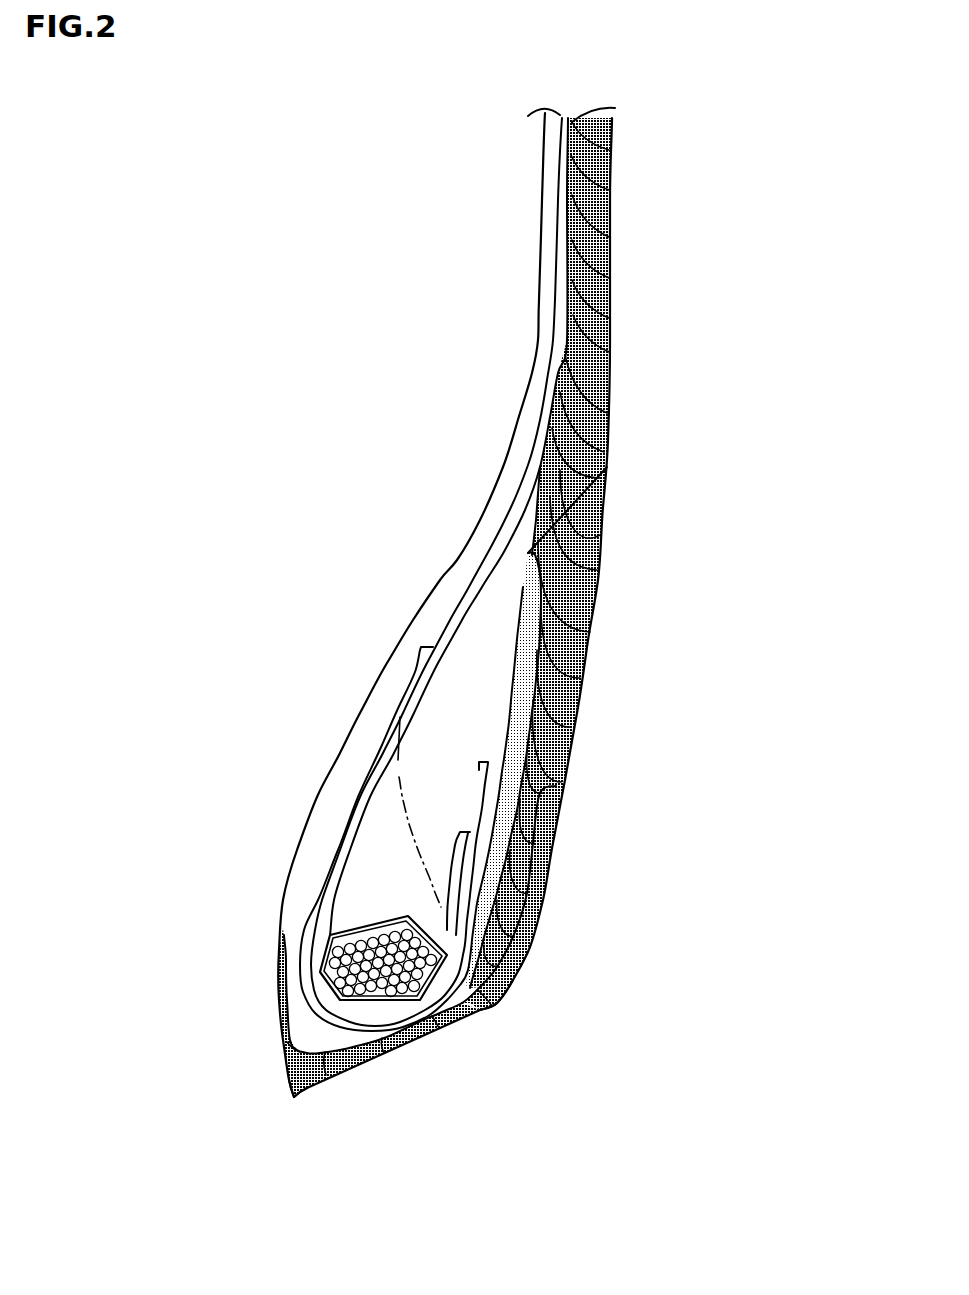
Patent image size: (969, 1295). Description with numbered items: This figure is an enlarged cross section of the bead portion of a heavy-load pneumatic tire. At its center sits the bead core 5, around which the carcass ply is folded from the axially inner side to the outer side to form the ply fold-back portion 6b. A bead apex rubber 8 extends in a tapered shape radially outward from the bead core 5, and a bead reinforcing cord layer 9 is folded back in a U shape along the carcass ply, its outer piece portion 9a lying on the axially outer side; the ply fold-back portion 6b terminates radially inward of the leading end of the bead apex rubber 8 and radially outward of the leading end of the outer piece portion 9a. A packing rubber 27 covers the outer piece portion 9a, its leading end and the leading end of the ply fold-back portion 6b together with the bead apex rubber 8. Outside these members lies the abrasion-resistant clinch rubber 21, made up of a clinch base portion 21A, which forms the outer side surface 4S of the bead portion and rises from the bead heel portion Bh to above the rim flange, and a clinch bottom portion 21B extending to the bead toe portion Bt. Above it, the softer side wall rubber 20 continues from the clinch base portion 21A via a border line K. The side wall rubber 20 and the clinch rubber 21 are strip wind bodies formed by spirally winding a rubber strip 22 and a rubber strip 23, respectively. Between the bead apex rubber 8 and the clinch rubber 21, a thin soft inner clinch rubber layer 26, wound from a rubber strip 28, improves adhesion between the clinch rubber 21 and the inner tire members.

The side wall rubber 20 is at (627, 553).
The rubber strip for the side wall 22 is at (541, 553).
The border line K is at (603, 498).
The outer side surface of the bead portion 4S is at (585, 628).
The inner clinch rubber layer 26 is at (620, 770).
The rubber strip for the inner clinch 28 is at (522, 740).
The clinch rubber 21 is at (563, 941).
The rubber strip for the clinch 23 is at (519, 941).
The clinch base portion 21A is at (557, 860).
The clinch bottom portion 21B is at (405, 1035).
The bead core 5 is at (355, 958).
The outer piece portion 9a is at (301, 882).
The bead reinforcing cord layer 9 is at (465, 885).
The ply fold-back portion 6b is at (470, 797).
The bead apex rubber 8 is at (437, 723).
The packing rubber 27 is at (498, 723).
The bead heel portion Bh is at (500, 1005).
The bead toe portion Bt is at (302, 1110).